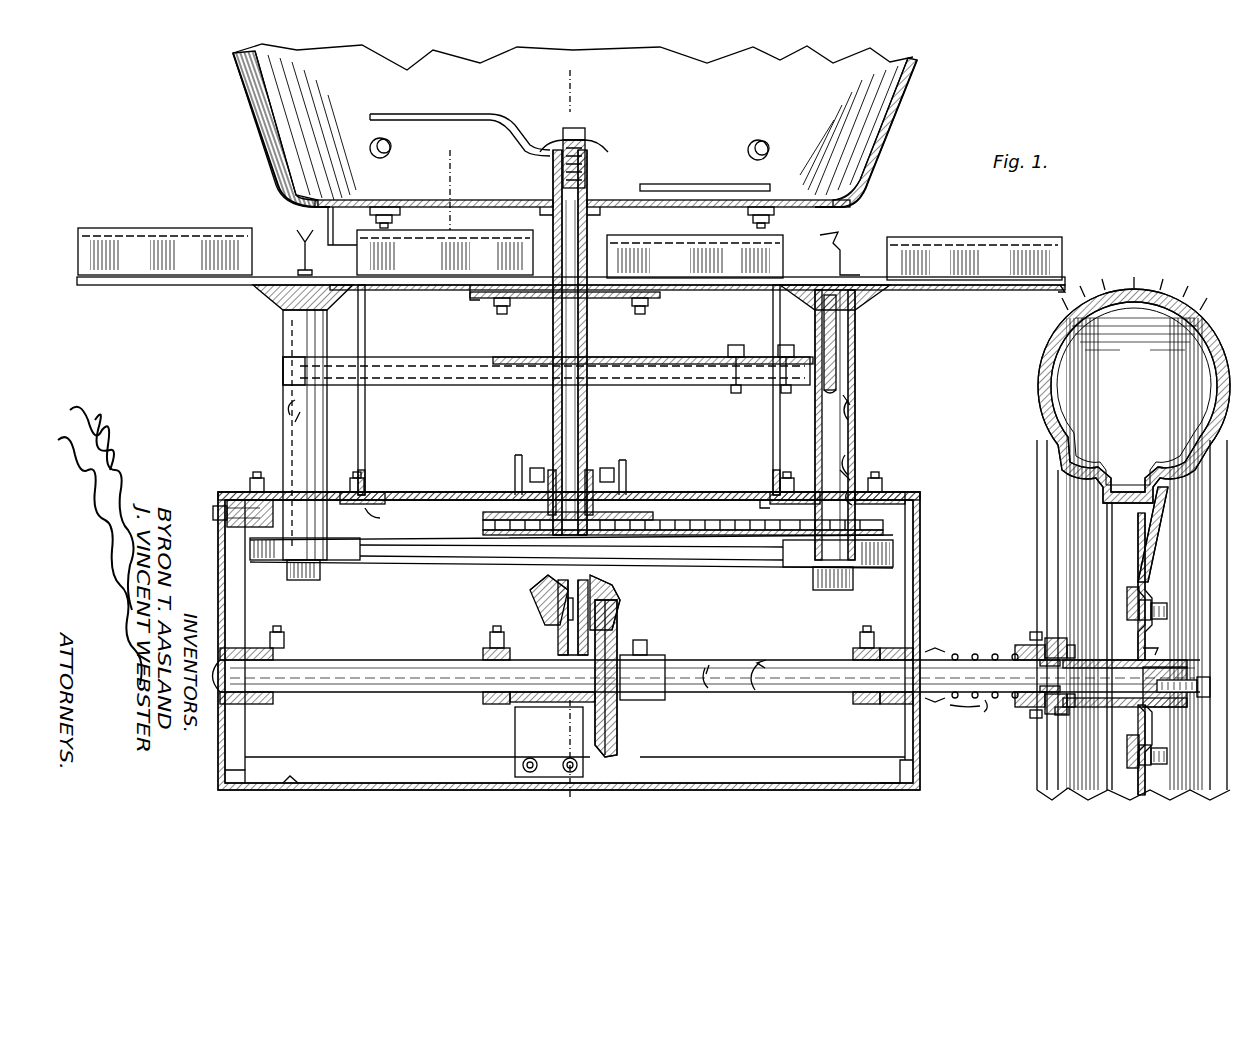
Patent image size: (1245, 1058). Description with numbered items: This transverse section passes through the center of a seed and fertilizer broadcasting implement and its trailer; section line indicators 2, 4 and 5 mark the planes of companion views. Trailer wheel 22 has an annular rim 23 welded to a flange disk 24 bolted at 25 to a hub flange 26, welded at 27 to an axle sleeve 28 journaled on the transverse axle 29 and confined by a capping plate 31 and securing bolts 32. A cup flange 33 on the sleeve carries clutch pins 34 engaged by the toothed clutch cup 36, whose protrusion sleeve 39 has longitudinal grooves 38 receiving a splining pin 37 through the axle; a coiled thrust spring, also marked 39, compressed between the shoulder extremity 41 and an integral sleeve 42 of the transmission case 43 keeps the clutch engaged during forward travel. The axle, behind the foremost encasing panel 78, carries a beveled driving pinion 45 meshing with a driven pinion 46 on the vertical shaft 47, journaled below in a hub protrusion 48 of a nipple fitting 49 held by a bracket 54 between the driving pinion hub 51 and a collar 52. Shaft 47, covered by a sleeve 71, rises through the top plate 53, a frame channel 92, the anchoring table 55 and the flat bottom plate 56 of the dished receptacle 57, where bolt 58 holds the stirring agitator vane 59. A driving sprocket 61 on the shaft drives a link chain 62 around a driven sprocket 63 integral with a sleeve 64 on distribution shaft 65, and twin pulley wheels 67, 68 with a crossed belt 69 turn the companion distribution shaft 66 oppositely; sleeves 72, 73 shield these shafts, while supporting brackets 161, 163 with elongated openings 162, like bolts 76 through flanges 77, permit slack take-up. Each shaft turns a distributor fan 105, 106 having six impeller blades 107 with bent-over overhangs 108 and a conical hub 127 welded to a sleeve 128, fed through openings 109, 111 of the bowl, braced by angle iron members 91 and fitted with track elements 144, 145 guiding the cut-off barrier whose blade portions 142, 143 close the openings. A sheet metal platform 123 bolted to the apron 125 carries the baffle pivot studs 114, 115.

The dished receptacle 57 is at (236, 84).
The offset agitator vane 59 is at (414, 114).
The section line 5- 5 is at (563, 91).
The section line 4- 4 is at (444, 150).
The section line 2- 2 is at (232, 214).
The bolt 58 is at (583, 132).
The vertical shaft 47 is at (590, 160).
The sleeve 71 is at (555, 412).
The blade portion 142 is at (685, 200).
The flat bottom plate 56 is at (602, 200).
The opening 111 is at (705, 192).
The track element 145 is at (766, 205).
The track element 144 is at (385, 207).
The opening 109 is at (447, 205).
The blade portion 143 is at (466, 205).
The angular overhang 108 is at (185, 228).
The impeller blade 107 is at (300, 252).
The apron 125 is at (328, 215).
The distributor fan 106 is at (195, 295).
The distributor fan 105 is at (1071, 287).
The conical hub 127 is at (270, 300).
The sleeve 128 is at (283, 333).
The distribution shaft 65 is at (836, 368).
The sleeve 73 is at (285, 443).
The companion distribution shaft 66 is at (297, 398).
The sheet metal platform 123 is at (620, 298).
The pivot stud 114 is at (500, 308).
The pivot stud 115 is at (645, 312).
The transverse strut channel 55 is at (612, 368).
The supporting bracket 163 is at (290, 370).
The supporting bracket 161 is at (720, 376).
The elongated opening 162 is at (777, 372).
The angle iron brace member 91 is at (365, 415).
The sleeve 72 is at (852, 406).
The frame channel 92 is at (518, 455).
The transmission case 43 is at (920, 535).
The flange 77 is at (368, 510).
The bolt 76 is at (252, 486).
The driven sprocket 63 is at (860, 490).
The driving sprocket 61 is at (497, 512).
The top plate 53 is at (668, 508).
The link chain 62 is at (700, 518).
The pulley wheel 67 is at (343, 560).
The pulley wheel 68 is at (806, 568).
The sleeve 64 is at (845, 585).
The belt crossover 69 is at (555, 550).
The driven pinion 46 is at (593, 598).
The beveled driving pinion 45 is at (620, 732).
The hub protrusion 48 is at (600, 628).
The driving pinion hub 51 is at (650, 660).
The nipple fitting 49 is at (545, 703).
The protrusion sleeve 39 is at (927, 656).
The collar 52 is at (482, 704).
The integral sleeve 42 is at (887, 704).
The foremost encasing panel 78 is at (569, 751).
The bracket 54 is at (520, 742).
The trailer wheel 22 is at (1156, 290).
The annular rim 23 is at (1068, 548).
The flange disk 24 is at (1140, 555).
The hub flange 26 is at (1135, 630).
The bolt 25 is at (1140, 610).
The weld 27 is at (1140, 648).
The axle hub sleeve 28 is at (1108, 712).
The capping plate 31 is at (1195, 664).
The securing bolt 32 is at (1200, 700).
The cup flange 33 is at (1038, 633).
The clutch pin 34 is at (1055, 638).
The splining pin 37 is at (1022, 656).
The clutch cup 36 is at (1020, 713).
The longitudinal groove 38 is at (1045, 716).
The transverse cylindrical axle 29 is at (952, 666).
The shoulder extremity 41 is at (985, 706).